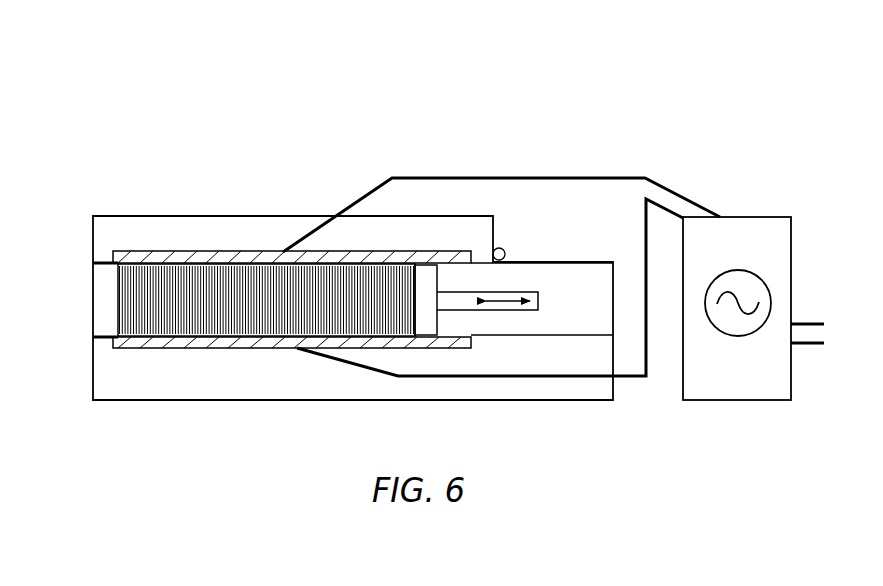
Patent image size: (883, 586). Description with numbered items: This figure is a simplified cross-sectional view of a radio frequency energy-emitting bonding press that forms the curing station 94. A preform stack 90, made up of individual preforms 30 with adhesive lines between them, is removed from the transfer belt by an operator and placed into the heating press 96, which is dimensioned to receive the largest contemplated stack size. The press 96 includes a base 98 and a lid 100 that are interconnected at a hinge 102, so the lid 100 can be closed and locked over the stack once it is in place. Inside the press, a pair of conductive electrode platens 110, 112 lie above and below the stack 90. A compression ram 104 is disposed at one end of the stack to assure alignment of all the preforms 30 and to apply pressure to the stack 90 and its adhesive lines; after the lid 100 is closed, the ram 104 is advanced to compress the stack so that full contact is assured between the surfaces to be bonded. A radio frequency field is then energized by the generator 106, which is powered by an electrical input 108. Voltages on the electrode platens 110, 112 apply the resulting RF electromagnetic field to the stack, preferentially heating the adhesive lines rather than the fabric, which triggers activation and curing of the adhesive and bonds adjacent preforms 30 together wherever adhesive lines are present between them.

The curing station 94 is at (650, 81).
The heating press 96 is at (91, 228).
The lid 100 is at (135, 222).
The base 98 is at (133, 386).
The conductive electrode platen 110 is at (210, 251).
The conductive electrode platen 112 is at (237, 348).
The preform stack 90 is at (221, 303).
The preform 30 is at (128, 308).
The compression ram 104 is at (427, 327).
The hinge 102 is at (501, 247).
The generator 106 is at (757, 222).
The electrical input 108 is at (808, 320).